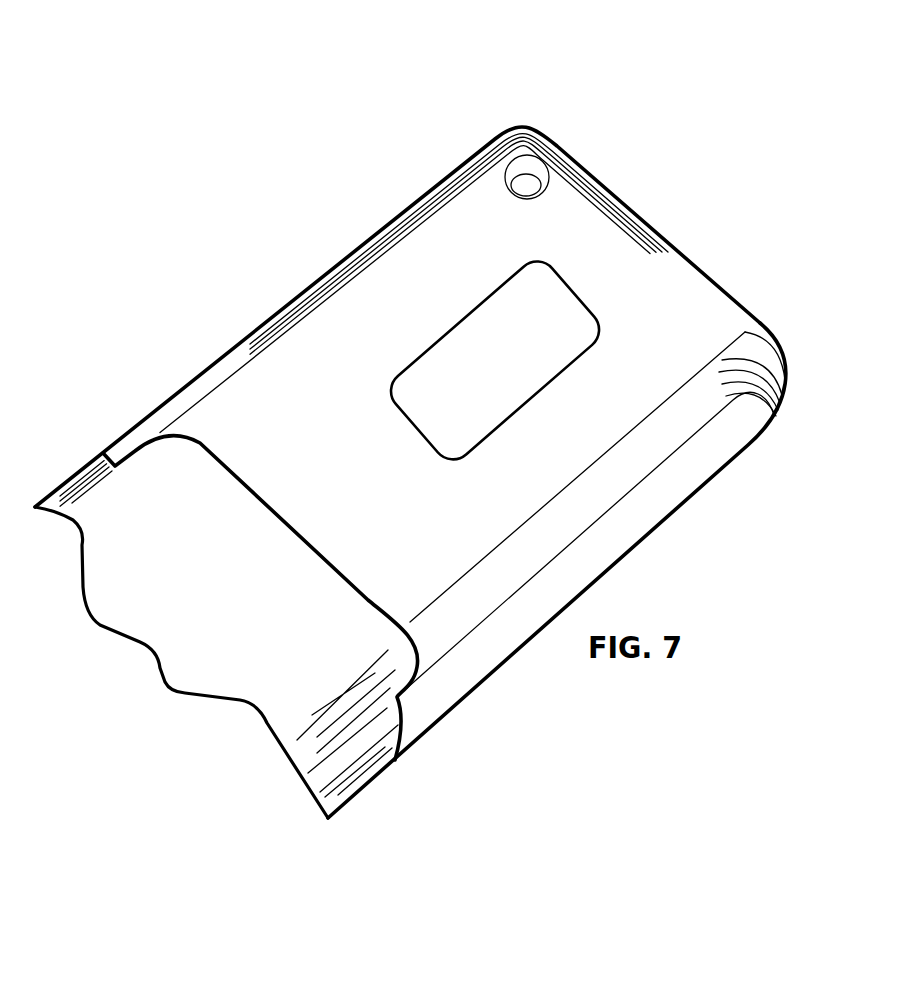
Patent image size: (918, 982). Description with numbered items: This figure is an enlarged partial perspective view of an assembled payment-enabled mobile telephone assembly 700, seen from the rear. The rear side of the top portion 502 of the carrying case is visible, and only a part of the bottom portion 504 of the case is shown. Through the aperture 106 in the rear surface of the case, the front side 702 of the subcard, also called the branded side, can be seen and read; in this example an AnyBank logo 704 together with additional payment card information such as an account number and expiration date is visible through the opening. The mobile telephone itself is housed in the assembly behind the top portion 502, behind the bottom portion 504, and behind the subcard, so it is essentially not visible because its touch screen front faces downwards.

The payment-enabled mobile telephone assembly 700 is at (688, 78).
The top portion 502 is at (497, 187).
The aperture 106 is at (521, 263).
The AnyBank logo 704 is at (458, 340).
The front side of the subcard 702 is at (603, 317).
The bottom portion 504 is at (103, 500).